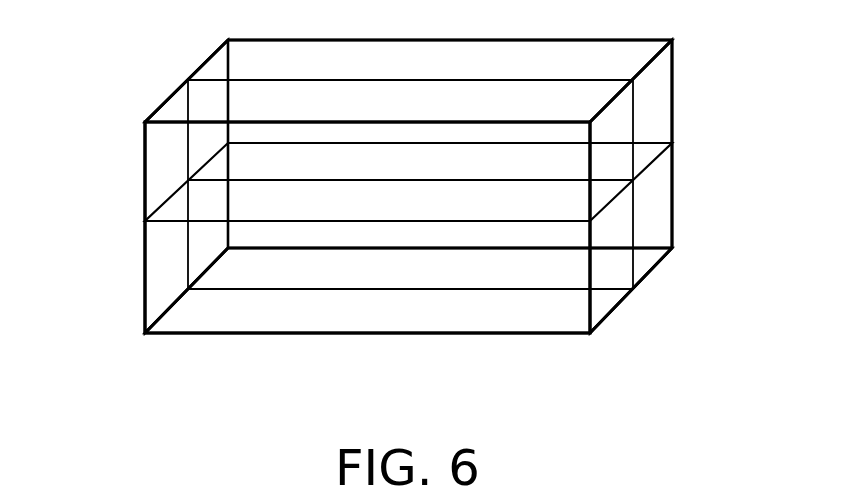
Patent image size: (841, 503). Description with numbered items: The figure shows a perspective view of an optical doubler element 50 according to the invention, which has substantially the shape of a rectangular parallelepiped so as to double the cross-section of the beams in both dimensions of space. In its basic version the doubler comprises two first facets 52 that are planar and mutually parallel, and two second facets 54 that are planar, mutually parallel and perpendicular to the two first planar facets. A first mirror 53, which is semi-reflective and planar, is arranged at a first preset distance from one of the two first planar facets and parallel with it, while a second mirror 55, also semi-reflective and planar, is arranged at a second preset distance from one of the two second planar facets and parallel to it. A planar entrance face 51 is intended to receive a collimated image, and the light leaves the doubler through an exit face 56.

The doubler element 50 is at (265, 383).
The planar entrance face 51 is at (155, 250).
The first facets 52 is at (180, 107).
The first mirror 53 is at (657, 163).
The second facets 54 is at (157, 163).
The second mirror 55 is at (638, 122).
The exit face 56 is at (655, 238).